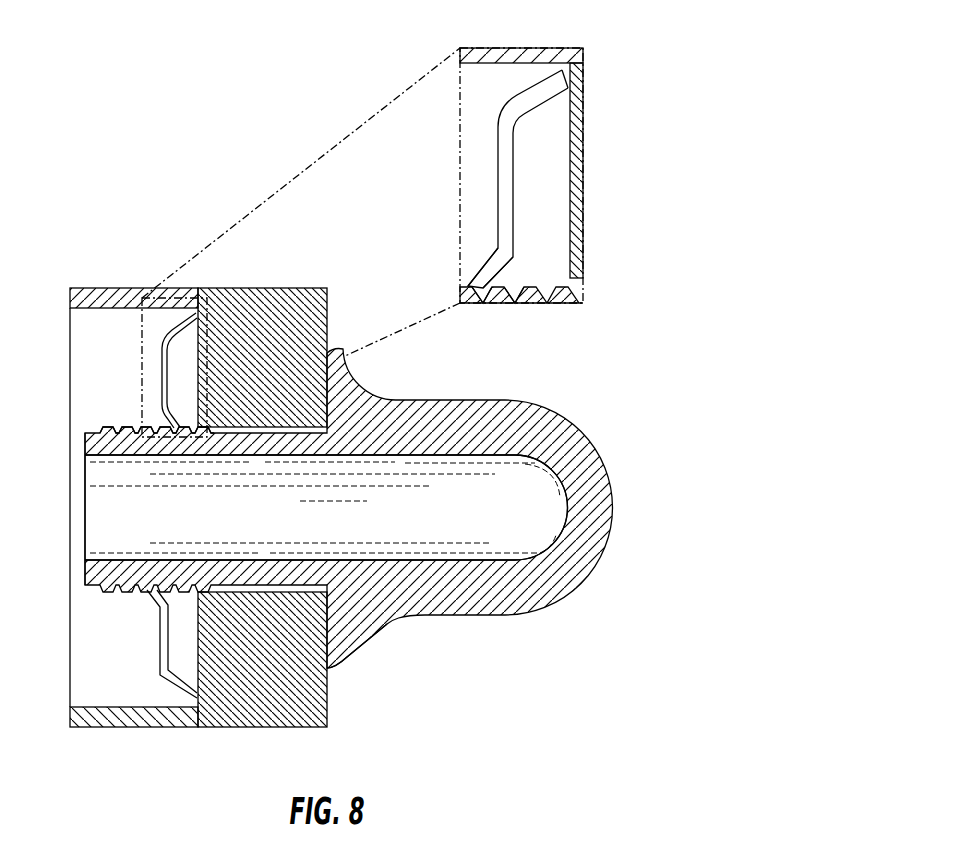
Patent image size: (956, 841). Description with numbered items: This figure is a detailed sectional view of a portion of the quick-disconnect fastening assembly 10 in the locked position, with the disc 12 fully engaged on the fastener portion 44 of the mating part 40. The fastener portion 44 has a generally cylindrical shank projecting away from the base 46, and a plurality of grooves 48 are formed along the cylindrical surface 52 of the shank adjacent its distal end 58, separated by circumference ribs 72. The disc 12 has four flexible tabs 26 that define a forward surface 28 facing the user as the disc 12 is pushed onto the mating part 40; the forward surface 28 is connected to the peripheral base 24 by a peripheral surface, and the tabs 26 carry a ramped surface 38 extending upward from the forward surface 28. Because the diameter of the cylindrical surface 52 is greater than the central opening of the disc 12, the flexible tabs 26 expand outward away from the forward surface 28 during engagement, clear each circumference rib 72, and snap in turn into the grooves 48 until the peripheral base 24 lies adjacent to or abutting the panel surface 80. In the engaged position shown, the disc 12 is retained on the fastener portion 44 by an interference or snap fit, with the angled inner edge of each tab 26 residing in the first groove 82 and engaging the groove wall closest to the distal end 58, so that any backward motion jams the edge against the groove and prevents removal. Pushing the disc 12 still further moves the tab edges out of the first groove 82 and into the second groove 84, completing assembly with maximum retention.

The quick-disconnect fastening assembly 10 is at (320, 410).
The disc 12 is at (165, 367).
The peripheral base 24 is at (588, 88).
The flexible tabs 26 is at (519, 186).
The forward surface 28 is at (505, 150).
The ramped surface 38 is at (478, 260).
The mating part 40 is at (370, 613).
The fastener portion 44 is at (227, 427).
The base 46 is at (340, 650).
The grooves 48 is at (122, 428).
The cylindrical surface 52 is at (262, 592).
The distal end 58 is at (84, 551).
The circumference ribs 72 is at (497, 300).
The panel surface 80 is at (588, 63).
The first groove 82 is at (483, 305).
The second groove 84 is at (517, 305).